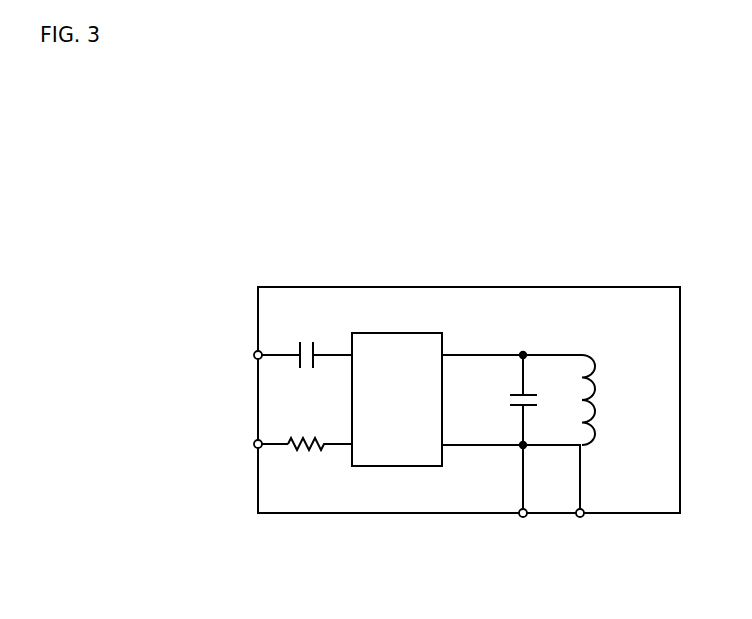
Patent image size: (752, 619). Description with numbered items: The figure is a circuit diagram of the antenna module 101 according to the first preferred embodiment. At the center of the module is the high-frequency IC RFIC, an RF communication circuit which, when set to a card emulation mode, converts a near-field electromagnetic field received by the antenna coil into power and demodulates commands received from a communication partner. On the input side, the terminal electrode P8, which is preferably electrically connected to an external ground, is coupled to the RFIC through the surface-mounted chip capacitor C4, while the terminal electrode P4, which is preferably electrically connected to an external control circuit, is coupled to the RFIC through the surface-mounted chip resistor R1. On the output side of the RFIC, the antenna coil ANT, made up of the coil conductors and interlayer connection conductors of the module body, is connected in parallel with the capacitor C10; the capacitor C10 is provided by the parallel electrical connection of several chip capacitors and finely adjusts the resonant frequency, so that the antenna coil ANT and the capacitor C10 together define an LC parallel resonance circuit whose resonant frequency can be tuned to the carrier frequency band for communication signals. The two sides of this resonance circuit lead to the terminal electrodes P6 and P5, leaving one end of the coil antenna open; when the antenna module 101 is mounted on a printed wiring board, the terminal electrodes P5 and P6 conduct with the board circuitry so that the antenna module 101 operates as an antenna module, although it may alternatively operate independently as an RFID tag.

The antenna module 101 is at (716, 236).
The high-frequency IC RFIC is at (397, 399).
The terminal electrode P8 is at (261, 355).
The terminal electrode P4 is at (255, 444).
The chip capacitor C4 is at (322, 341).
The chip resistor R1 is at (320, 429).
The capacitor C10 is at (498, 400).
The antenna coil ANT is at (596, 400).
The terminal electrode P6 is at (522, 497).
The terminal electrode P5 is at (579, 497).